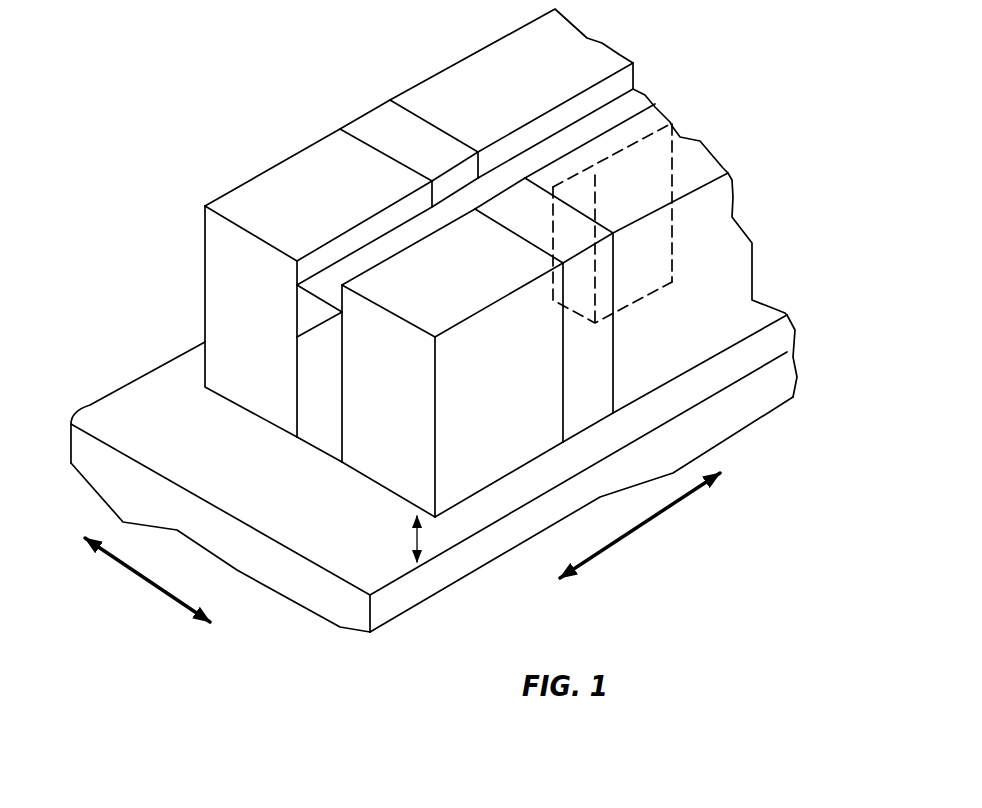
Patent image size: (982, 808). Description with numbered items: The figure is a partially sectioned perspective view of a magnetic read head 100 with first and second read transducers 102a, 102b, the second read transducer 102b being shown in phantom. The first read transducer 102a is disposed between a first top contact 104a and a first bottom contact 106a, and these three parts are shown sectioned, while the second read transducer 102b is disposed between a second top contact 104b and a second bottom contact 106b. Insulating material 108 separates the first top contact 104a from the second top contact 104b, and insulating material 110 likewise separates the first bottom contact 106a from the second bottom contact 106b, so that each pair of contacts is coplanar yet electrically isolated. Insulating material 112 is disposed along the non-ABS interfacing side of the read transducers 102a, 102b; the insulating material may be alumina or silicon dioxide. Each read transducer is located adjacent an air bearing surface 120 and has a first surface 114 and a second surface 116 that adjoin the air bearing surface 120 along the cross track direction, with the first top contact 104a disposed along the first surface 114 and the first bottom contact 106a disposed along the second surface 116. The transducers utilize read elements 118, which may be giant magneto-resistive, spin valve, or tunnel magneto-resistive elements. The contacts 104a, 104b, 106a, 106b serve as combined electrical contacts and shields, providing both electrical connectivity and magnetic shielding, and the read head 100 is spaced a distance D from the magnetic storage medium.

The magnetic read head 100 is at (278, 56).
The first read transducer 102a is at (292, 388).
The second read transducer 102b is at (648, 180).
The first top contact 104a is at (287, 180).
The second top contact 104b is at (508, 53).
The first bottom contact 106a is at (457, 422).
The second bottom contact 106b is at (735, 270).
The insulating material 108 is at (385, 128).
The insulating material 110 is at (580, 342).
The insulating material 112 is at (323, 288).
The first surface 114 is at (297, 410).
The second surface 116 is at (342, 458).
The read element 118 is at (318, 372).
The air bearing surface 120 is at (128, 408).